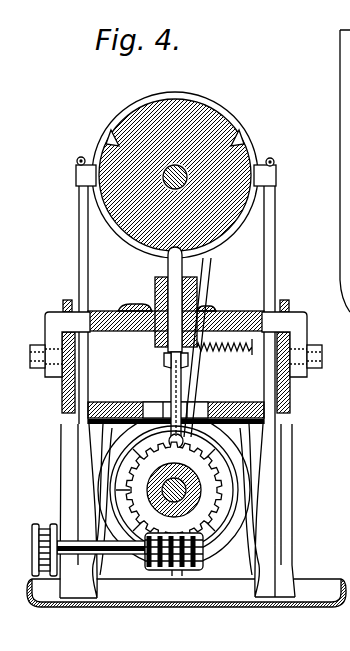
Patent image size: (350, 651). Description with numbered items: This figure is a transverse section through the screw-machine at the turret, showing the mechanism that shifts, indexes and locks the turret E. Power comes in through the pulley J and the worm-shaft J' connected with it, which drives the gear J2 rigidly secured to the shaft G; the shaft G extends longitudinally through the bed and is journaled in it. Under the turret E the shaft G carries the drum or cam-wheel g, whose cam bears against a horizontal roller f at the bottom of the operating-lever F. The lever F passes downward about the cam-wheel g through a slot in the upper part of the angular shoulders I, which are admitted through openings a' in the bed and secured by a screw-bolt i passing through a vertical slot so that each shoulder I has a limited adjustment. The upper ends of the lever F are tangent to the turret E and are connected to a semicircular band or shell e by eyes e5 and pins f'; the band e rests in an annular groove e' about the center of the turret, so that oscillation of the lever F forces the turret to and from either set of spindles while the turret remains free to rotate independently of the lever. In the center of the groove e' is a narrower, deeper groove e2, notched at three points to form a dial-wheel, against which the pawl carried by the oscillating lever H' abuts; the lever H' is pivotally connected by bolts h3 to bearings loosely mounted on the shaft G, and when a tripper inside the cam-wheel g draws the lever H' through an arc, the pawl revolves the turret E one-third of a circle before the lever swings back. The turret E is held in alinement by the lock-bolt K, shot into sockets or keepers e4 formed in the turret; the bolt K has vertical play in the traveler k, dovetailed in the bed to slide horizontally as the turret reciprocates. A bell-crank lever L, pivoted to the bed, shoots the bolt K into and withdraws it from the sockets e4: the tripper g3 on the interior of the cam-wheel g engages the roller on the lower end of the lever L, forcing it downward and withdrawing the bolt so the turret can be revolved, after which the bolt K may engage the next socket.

The turret E is at (164, 112).
The semicircular band or shell e is at (175, 175).
The annular groove e' is at (153, 332).
The narrower deeper groove e2 is at (164, 360).
The sockets or keepers e4 is at (264, 129).
The eyes e5 is at (289, 180).
The pins f' is at (176, 150).
The horizontal roller f is at (177, 602).
The operating-lever F is at (273, 258).
The openings a' is at (168, 302).
The angular shoulders I is at (47, 326).
The screw-bolt i is at (31, 356).
The lock-bolt K is at (156, 293).
The traveler k is at (218, 310).
The oscillating lever H' is at (200, 347).
The bolts h3 is at (229, 353).
The bell-crank lever L is at (170, 373).
The drum or cam-wheel g is at (222, 438).
The tripper g3 is at (120, 447).
The pulley J is at (88, 535).
The worm-shaft J' is at (164, 582).
The gear J2 is at (200, 473).
The shaft G is at (182, 490).